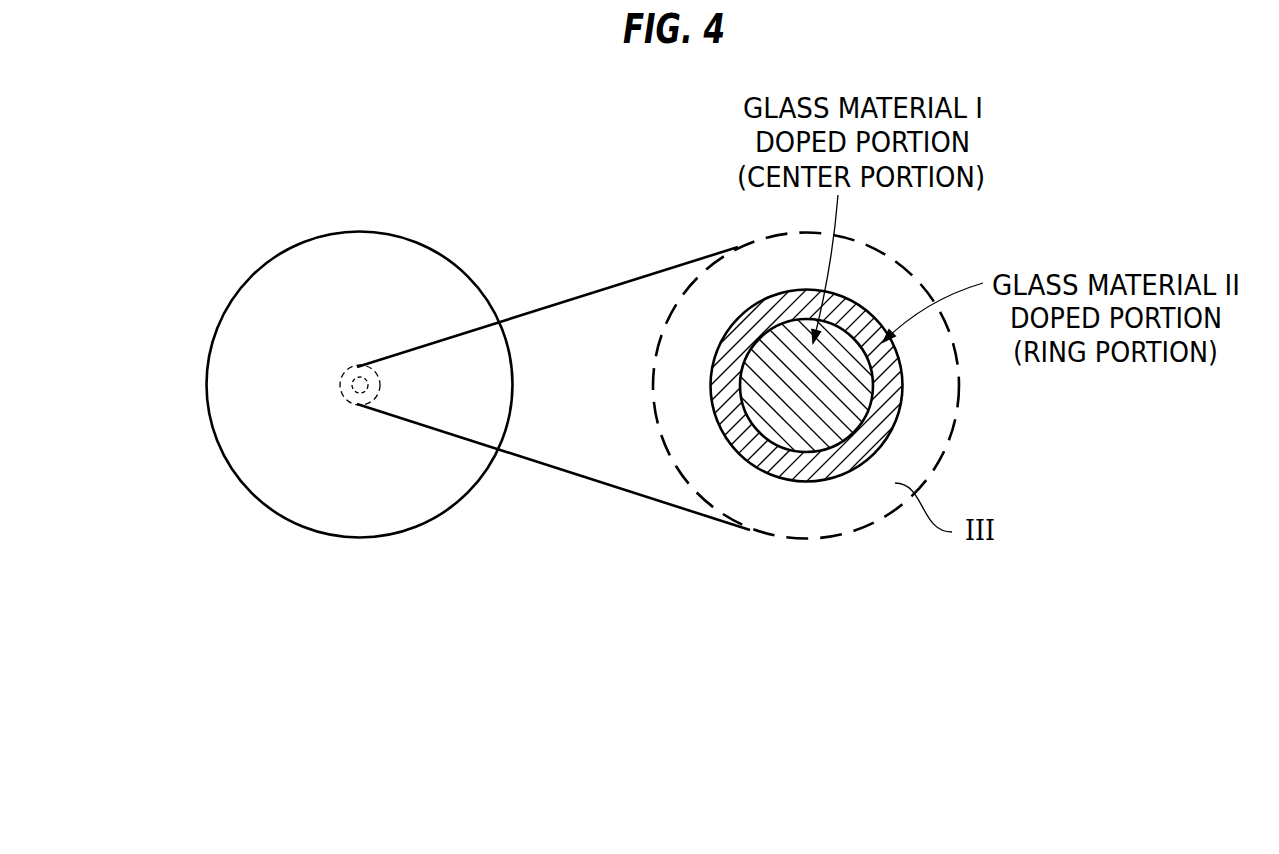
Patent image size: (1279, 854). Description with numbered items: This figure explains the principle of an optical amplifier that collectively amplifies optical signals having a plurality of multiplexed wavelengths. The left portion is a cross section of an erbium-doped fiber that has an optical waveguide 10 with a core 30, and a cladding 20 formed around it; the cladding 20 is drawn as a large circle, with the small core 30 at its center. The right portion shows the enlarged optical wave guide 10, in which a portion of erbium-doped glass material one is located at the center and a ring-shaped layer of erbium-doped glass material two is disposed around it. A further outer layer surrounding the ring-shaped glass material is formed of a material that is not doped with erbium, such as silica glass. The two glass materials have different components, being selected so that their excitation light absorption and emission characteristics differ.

The optical waveguide 10 is at (342, 402).
The cladding 20 is at (377, 272).
The core 30 is at (366, 389).